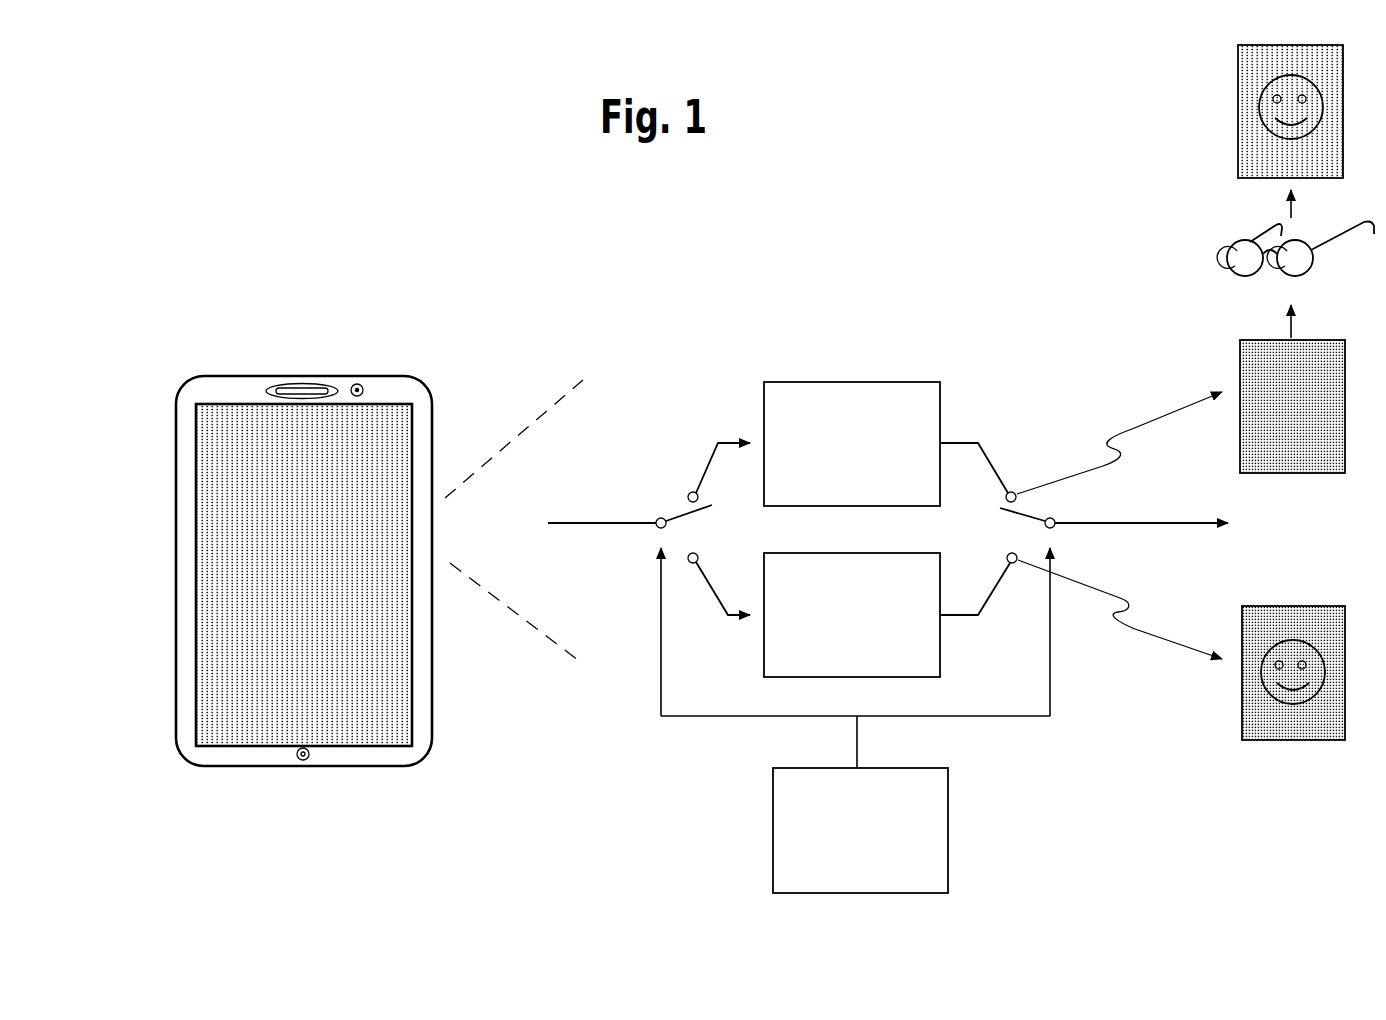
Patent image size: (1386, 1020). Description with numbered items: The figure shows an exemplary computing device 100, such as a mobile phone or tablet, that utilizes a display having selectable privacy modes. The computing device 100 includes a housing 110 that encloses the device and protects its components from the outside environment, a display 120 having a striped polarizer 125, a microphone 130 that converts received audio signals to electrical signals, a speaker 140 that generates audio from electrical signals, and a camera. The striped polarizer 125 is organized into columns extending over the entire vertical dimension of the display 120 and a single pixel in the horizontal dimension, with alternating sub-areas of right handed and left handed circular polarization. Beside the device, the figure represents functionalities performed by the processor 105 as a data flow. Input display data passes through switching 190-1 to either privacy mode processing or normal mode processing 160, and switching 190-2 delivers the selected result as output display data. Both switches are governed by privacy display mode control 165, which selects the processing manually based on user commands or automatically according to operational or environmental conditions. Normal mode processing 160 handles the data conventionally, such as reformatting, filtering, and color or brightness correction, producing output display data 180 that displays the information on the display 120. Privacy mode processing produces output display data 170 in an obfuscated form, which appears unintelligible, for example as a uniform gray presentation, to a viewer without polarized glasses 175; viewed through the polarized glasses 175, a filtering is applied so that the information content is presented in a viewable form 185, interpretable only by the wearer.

The computing device 100 is at (310, 302).
The processor 105 is at (836, 344).
The housing 110 is at (433, 430).
The display 120 is at (433, 652).
The striped polarizer 125 is at (393, 712).
The microphone 130 is at (309, 761).
The speaker 140 is at (300, 383).
The normal mode processing 160 is at (852, 615).
The privacy display mode control 165 is at (860, 830).
The output display data 170 is at (1240, 372).
The polarized glasses 175 is at (1226, 261).
The output display data 180 is at (1243, 714).
The viewable form 185 is at (1238, 98).
The switching 190-1 is at (652, 535).
The switching 190-2 is at (1058, 513).